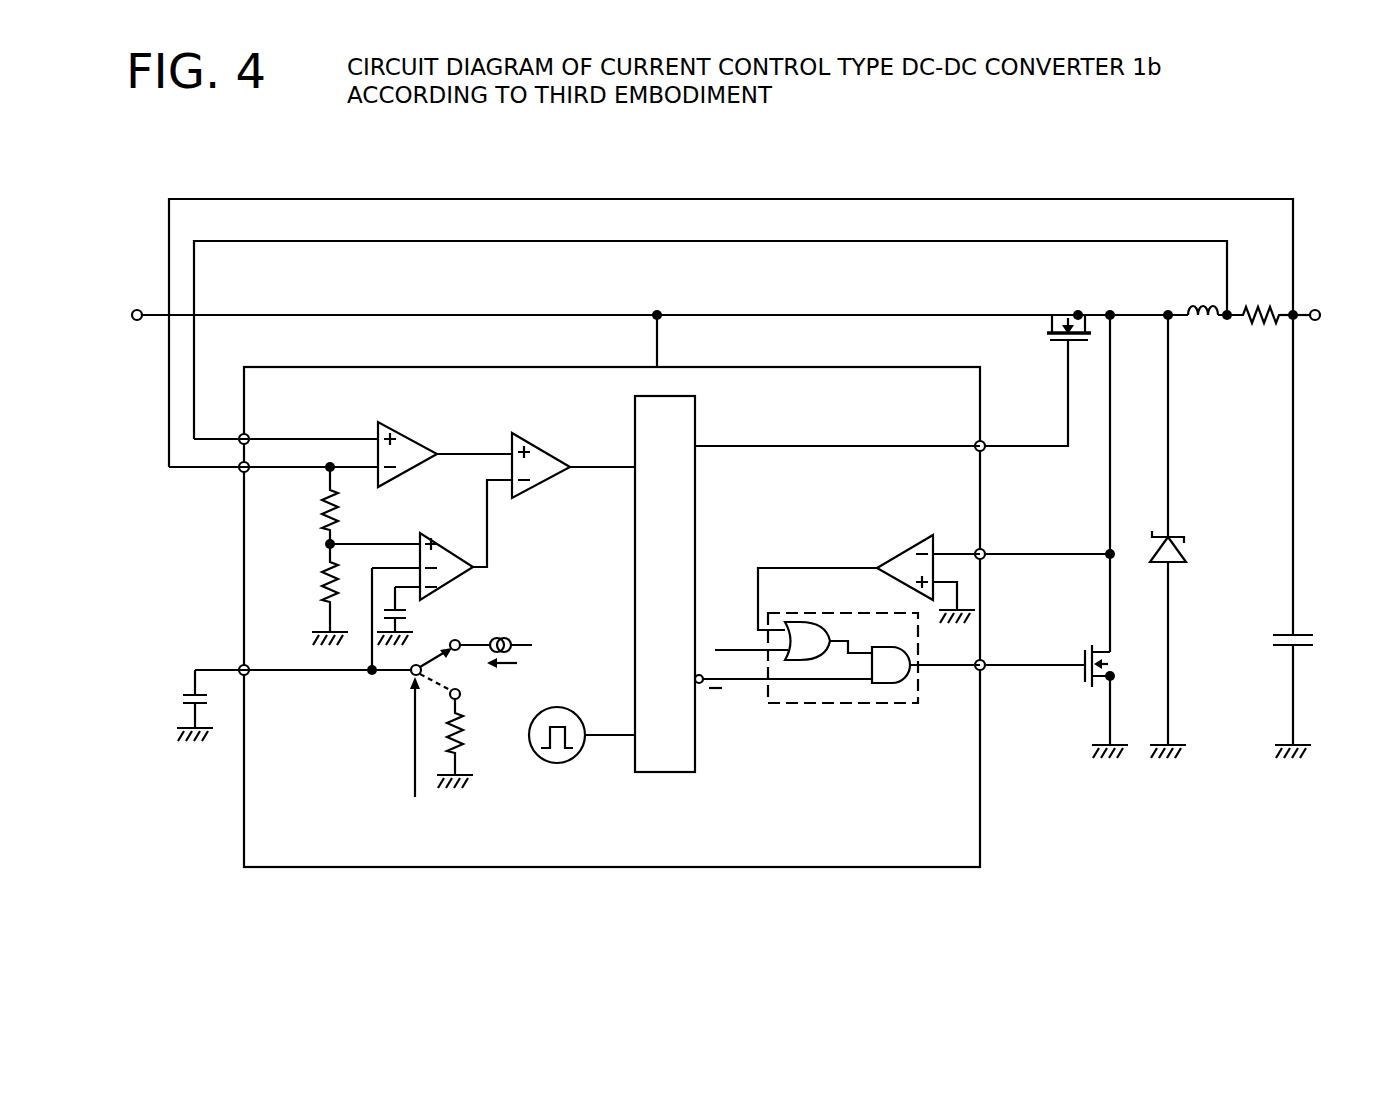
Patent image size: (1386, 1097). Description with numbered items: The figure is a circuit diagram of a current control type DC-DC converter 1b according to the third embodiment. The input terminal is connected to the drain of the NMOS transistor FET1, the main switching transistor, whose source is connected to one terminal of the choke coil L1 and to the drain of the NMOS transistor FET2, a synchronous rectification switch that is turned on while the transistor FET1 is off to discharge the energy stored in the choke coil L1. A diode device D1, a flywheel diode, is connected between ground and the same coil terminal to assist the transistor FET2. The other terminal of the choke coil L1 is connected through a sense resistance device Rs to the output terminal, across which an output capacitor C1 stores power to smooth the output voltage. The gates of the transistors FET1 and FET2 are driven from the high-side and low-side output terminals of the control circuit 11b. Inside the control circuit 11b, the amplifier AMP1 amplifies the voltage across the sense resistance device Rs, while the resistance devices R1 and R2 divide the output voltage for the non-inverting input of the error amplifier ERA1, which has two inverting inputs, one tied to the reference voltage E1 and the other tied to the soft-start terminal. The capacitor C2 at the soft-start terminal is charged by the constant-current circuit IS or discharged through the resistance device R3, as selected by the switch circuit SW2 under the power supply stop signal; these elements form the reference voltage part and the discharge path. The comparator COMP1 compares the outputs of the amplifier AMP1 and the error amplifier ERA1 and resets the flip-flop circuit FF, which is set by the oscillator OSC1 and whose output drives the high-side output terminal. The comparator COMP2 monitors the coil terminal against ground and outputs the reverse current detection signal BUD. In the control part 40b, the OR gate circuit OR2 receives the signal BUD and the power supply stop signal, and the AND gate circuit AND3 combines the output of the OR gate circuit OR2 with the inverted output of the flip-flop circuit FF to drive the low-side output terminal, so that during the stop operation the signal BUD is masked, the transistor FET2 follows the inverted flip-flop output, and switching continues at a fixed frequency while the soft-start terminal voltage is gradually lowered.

The current control type DC-DC converter 1b is at (1066, 180).
The control circuit 11b is at (980, 800).
The control part 40b is at (790, 703).
The amplifier AMP1 is at (413, 416).
The comparator COMP1 is at (548, 428).
The error amplifier ERA1 is at (440, 547).
The reference voltage E1 is at (406, 614).
The resistance device R1 is at (314, 505).
The resistance device R2 is at (319, 594).
The resistance device R3 is at (466, 738).
The capacitor C2 is at (183, 697).
The switch circuit SW2 is at (413, 678).
The constant-current circuit IS is at (495, 643).
The oscillator OSC1 is at (583, 752).
The flip-flop circuit FF is at (807, 584).
The comparator COMP2 is at (905, 548).
The reverse current detection signal BUD is at (817, 587).
The OR gate circuit OR2 is at (826, 603).
The AND gate circuit AND3 is at (888, 692).
The NMOS transistor FET1 is at (1063, 311).
The NMOS transistor FET2 is at (1045, 676).
The choke coil L1 is at (1203, 296).
The sense resistance device Rs is at (1249, 300).
The diode device D1 is at (1176, 550).
The output capacitor C1 is at (1276, 638).